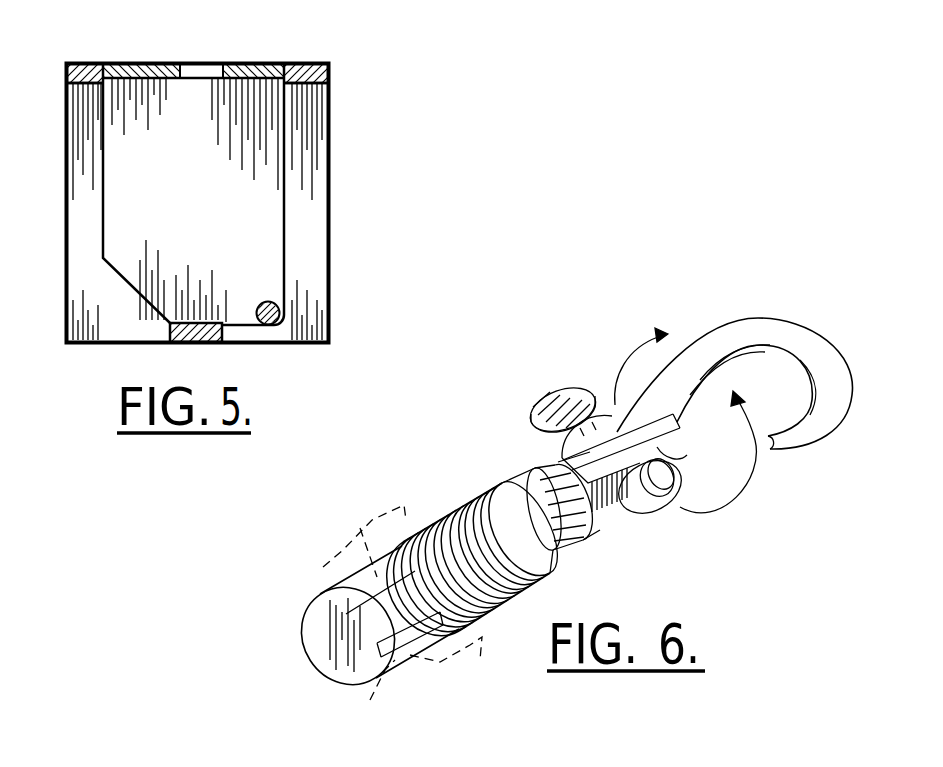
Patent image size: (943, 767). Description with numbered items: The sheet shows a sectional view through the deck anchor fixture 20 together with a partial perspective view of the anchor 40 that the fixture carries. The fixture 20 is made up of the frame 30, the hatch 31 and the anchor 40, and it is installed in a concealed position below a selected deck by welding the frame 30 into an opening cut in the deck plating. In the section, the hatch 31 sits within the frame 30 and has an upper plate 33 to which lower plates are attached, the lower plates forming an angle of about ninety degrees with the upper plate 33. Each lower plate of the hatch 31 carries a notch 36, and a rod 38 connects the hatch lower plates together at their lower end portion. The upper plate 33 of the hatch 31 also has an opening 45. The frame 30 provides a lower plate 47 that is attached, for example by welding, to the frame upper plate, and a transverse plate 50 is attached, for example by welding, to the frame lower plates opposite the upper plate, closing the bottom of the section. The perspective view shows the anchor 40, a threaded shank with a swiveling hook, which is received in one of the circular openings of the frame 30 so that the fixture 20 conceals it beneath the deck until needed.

In FIG. 5, the fixture 20 is at (331, 228).
In FIG. 5, the frame 30 is at (365, 53).
In FIG. 5, the hatch 31 is at (152, 63).
In FIG. 5, the upper plate 33 is at (67, 80).
In FIG. 5, the opening 45 is at (207, 63).
In FIG. 5, the notch 36 is at (205, 320).
In FIG. 5, the rod 38 is at (279, 302).
In FIG. 5, the lower plate 47 is at (103, 318).
In FIG. 5, the transverse plate 50 is at (220, 342).
In FIG. 6, the anchor 40 is at (765, 305).